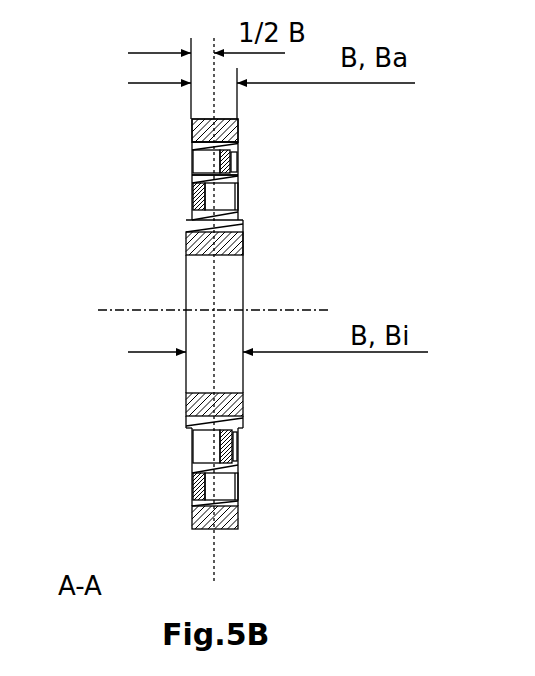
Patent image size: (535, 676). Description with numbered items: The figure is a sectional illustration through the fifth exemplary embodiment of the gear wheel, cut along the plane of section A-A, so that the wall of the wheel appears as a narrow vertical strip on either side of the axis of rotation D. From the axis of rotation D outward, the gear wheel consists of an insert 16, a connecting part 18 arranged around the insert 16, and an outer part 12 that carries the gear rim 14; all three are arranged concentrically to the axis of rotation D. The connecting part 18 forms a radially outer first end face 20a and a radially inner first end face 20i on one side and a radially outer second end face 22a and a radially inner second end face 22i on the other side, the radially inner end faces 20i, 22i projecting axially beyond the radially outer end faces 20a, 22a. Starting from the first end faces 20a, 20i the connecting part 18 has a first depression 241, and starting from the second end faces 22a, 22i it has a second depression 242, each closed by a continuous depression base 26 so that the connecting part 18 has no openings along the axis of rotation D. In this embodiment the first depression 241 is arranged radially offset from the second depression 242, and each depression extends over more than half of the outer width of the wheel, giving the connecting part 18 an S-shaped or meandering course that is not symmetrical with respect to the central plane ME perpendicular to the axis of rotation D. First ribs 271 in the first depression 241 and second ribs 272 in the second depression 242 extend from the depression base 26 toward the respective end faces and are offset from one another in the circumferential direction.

The outer part 12 is at (238, 123).
The gear rim 14 is at (238, 123).
The insert 16 is at (244, 257).
The connecting part 18 is at (192, 182).
The radially outer first end face 20a is at (192, 130).
The radially inner first end face 20i is at (186, 238).
The radially outer second end face 22a is at (238, 138).
The radially inner second end face 22i is at (244, 238).
The first depression 241 is at (192, 160).
The second depression 242 is at (238, 200).
The depression base 26 is at (238, 160).
The first rib 271 is at (186, 218).
The second rib 272 is at (238, 183).
The central plane ME is at (215, 367).
The axis of rotation D is at (128, 312).